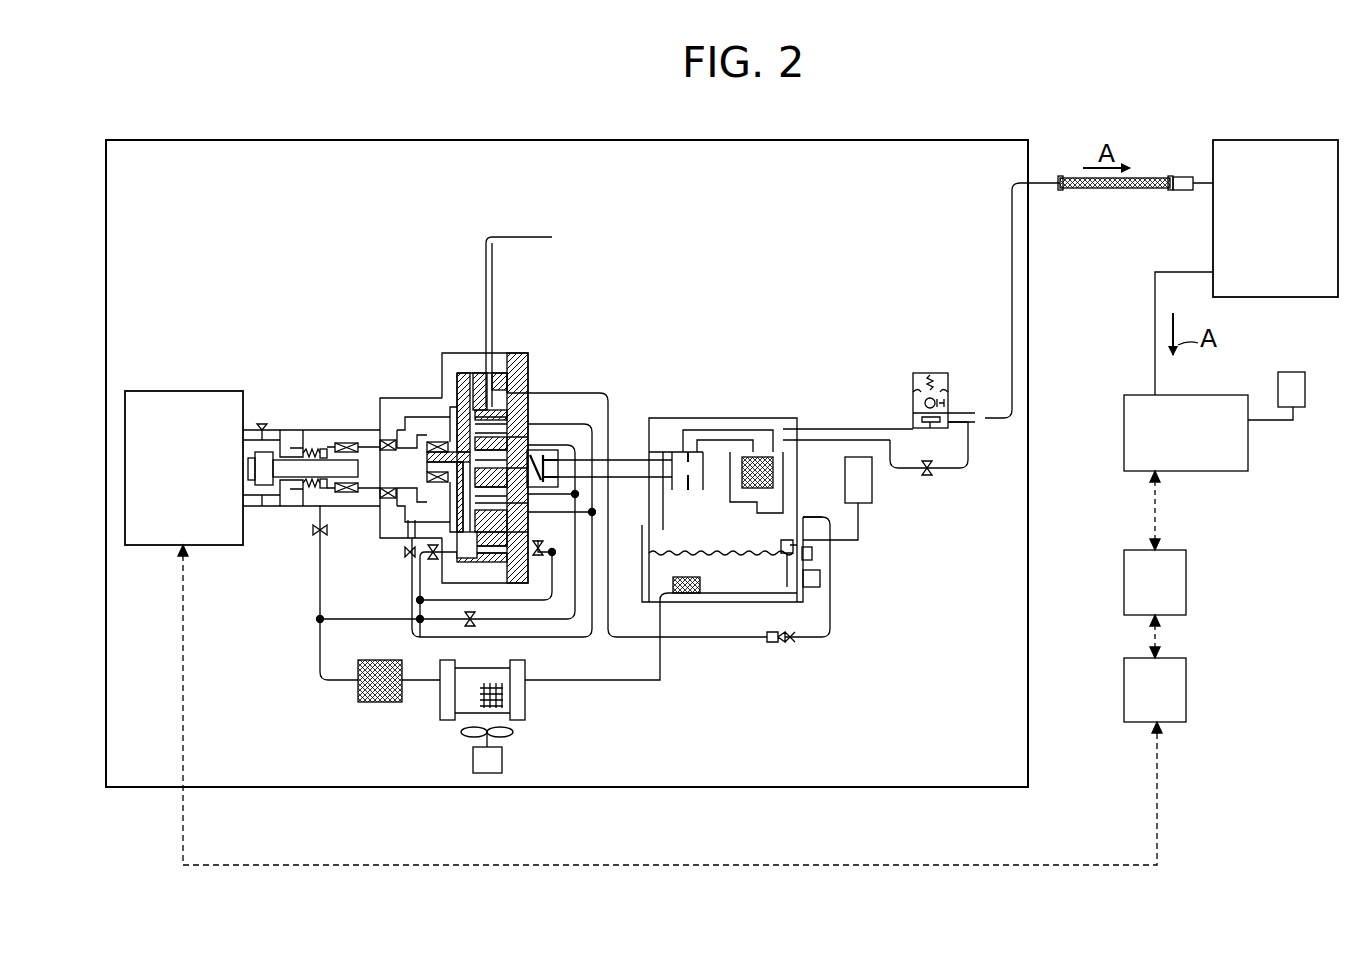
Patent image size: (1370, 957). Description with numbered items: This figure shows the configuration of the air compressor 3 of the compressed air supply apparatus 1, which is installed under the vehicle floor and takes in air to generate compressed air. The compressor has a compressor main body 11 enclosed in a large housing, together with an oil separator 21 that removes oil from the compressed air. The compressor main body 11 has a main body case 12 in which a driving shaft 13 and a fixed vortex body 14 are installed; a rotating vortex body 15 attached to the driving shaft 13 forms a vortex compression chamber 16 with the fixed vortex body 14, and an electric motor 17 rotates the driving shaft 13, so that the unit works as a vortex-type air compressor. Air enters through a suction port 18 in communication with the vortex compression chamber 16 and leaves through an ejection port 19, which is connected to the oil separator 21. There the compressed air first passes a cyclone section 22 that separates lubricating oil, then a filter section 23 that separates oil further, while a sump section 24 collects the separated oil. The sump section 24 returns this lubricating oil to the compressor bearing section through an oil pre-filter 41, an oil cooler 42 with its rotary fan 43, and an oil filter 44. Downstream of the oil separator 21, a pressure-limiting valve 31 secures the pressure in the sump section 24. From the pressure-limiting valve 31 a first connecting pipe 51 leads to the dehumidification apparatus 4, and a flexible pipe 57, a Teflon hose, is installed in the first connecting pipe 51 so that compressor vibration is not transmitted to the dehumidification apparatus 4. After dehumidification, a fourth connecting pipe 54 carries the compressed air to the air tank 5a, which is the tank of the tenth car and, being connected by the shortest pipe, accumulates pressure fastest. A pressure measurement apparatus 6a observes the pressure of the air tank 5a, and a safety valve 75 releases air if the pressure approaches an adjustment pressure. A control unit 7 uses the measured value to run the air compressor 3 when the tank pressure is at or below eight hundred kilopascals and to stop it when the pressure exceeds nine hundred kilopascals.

The compressed air supply apparatus 1 is at (1222, 742).
The air compressor 3 is at (1188, 106).
The dehumidification apparatus 4 is at (1278, 140).
The air tank 5a is at (1248, 452).
The pressure measurement apparatus 6a is at (1186, 580).
The control unit 7 is at (1186, 685).
The compressor main body 11 is at (212, 140).
The main body case 12 is at (400, 398).
The driving shaft 13 is at (375, 462).
The fixed vortex body 14 is at (522, 368).
The rotating vortex body 15 is at (470, 390).
The vortex compression chamber 16 is at (500, 462).
The electric motor 17 is at (180, 391).
The suction port 18 is at (492, 332).
The ejection port 19 is at (555, 462).
The oil separator 21 is at (724, 418).
The cyclone section 22 is at (690, 462).
The filter section 23 is at (758, 457).
The sump section 24 is at (770, 585).
The pressure-limiting valve 31 is at (938, 373).
The oil pre-filter 41 is at (688, 593).
The oil cooler 42 is at (525, 700).
The rotary fan 43 is at (502, 757).
The oil filter 44 is at (375, 703).
The first connecting pipe 51 is at (1045, 182).
The fourth connecting pipe 54 is at (1155, 350).
The flexible pipe 57 is at (1122, 190).
The safety valve 75 is at (1305, 388).